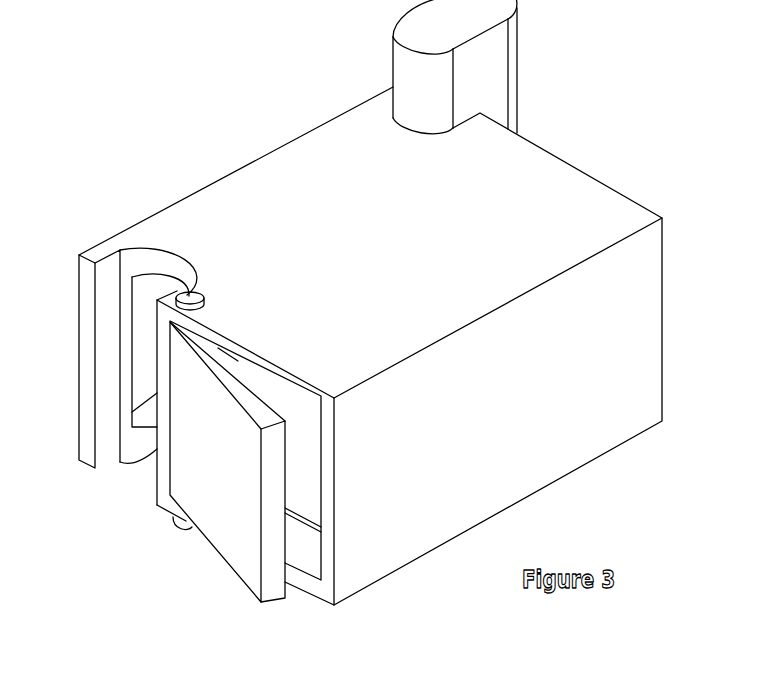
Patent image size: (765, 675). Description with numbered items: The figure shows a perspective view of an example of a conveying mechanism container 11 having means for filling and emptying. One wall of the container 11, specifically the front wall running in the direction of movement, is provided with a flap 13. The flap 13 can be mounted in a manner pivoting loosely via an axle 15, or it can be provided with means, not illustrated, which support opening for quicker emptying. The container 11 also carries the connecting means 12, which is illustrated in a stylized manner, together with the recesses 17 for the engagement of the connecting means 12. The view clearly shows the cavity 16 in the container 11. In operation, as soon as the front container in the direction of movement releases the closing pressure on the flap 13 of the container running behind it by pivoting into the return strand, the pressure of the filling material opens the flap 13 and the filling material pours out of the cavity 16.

The container 11 is at (543, 148).
The connecting means 12 is at (491, 67).
The flap 13 is at (235, 383).
The axle 15 is at (194, 297).
The cavity 16 is at (298, 425).
The recesses 17 is at (140, 262).